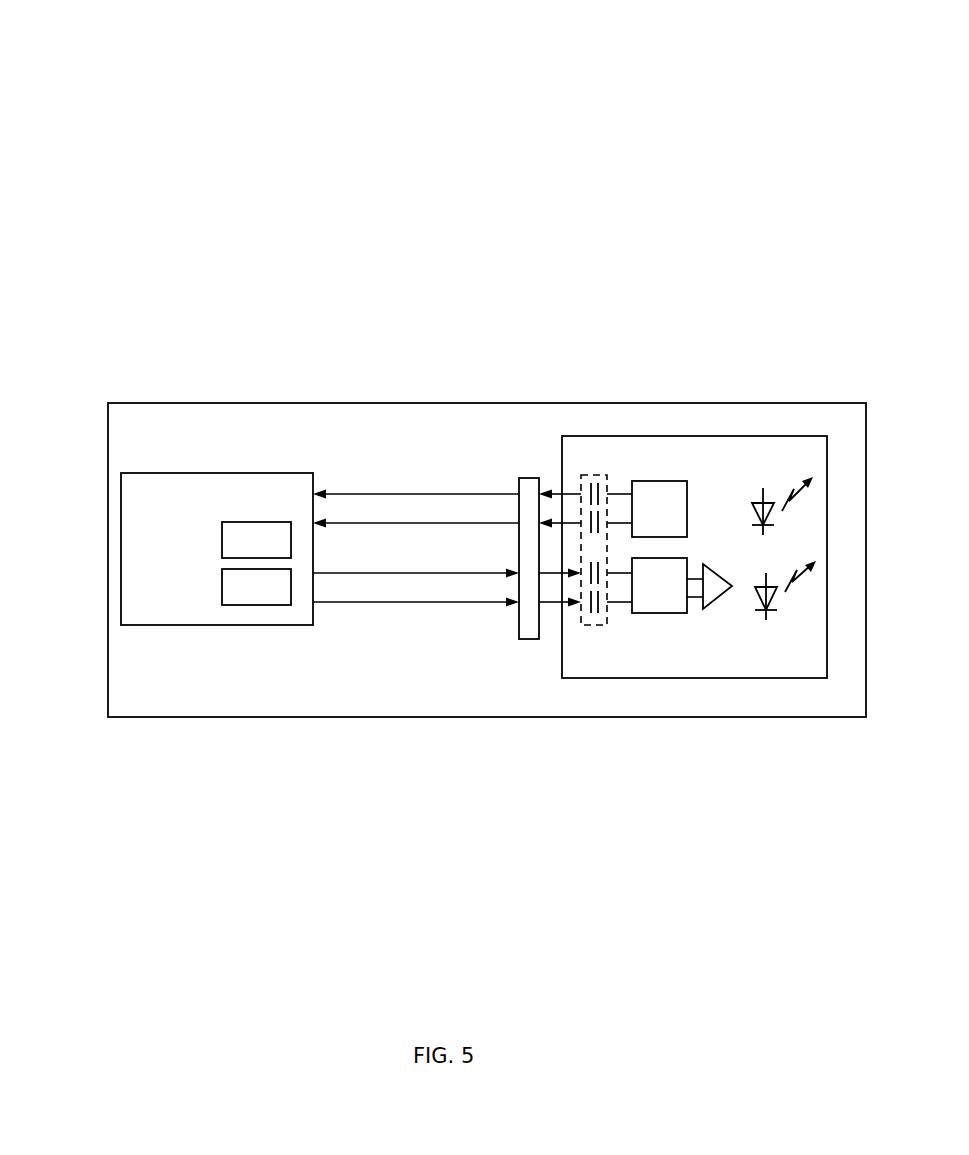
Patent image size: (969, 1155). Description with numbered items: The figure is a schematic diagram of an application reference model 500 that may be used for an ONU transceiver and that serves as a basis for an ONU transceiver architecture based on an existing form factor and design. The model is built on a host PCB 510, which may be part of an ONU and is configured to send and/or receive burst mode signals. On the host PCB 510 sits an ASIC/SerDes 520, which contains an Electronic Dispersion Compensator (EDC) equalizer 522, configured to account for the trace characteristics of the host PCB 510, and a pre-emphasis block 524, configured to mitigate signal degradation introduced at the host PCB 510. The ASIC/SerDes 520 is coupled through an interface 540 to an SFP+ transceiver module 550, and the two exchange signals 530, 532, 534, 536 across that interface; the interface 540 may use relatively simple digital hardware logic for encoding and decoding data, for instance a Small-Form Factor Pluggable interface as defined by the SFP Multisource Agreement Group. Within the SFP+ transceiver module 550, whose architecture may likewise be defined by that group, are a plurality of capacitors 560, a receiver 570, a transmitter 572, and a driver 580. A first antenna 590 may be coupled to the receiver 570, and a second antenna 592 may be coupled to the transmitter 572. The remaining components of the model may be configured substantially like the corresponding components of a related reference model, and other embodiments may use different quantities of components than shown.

The application reference model 500 is at (84, 87).
The host PCB 510 is at (418, 717).
The ASIC/SerDes 520 is at (228, 625).
The Electronic Dispersion Compensator (EDC) equalizer 522 is at (277, 522).
The pre-emphasis block 524 is at (285, 606).
The signal 530 is at (345, 493).
The signal 532 is at (397, 523).
The signal 534 is at (392, 573).
The signal 536 is at (350, 602).
The interface 540 is at (527, 639).
The SFP+ transceiver module 550 is at (633, 436).
The capacitors 560 is at (582, 627).
The receiver 570 is at (663, 481).
The transmitter 572 is at (660, 613).
The driver 580 is at (712, 602).
The first antenna 590 is at (768, 502).
The second antenna 592 is at (777, 595).